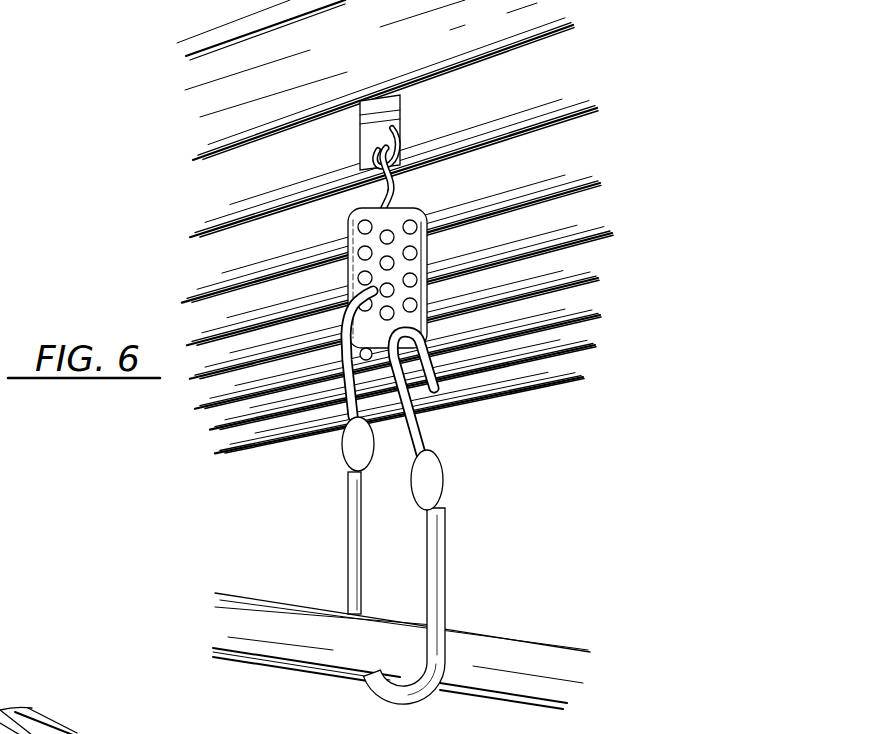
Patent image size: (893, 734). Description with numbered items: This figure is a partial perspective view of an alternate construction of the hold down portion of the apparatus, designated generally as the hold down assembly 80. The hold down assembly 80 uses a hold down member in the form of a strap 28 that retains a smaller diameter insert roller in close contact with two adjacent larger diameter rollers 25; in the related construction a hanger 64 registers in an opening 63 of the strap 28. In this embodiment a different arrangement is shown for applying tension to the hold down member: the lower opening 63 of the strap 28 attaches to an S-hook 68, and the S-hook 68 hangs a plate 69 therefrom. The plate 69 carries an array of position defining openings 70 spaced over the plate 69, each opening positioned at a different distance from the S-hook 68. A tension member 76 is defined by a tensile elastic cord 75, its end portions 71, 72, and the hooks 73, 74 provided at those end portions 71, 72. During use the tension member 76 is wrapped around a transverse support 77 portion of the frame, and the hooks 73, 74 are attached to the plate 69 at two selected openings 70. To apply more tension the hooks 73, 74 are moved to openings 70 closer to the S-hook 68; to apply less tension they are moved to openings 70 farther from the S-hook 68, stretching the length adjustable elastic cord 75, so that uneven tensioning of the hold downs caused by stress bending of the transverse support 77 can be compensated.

The hold down assembly 80 is at (155, 40).
The larger diameter rollers 25 is at (200, 52).
The strap 28 is at (375, 123).
The opening 63 is at (392, 125).
The S-hook 68 is at (398, 185).
The plate 69 is at (345, 297).
The position defining openings 70 is at (358, 250).
The end portion 71 is at (355, 445).
The end portion 72 is at (435, 485).
The hook 73 is at (340, 385).
The hook 74 is at (425, 430).
The tensile elastic cord 75 is at (447, 582).
The tension member 76 is at (348, 560).
The transverse support 77 is at (373, 645).
The hanger 64 is at (88, 733).